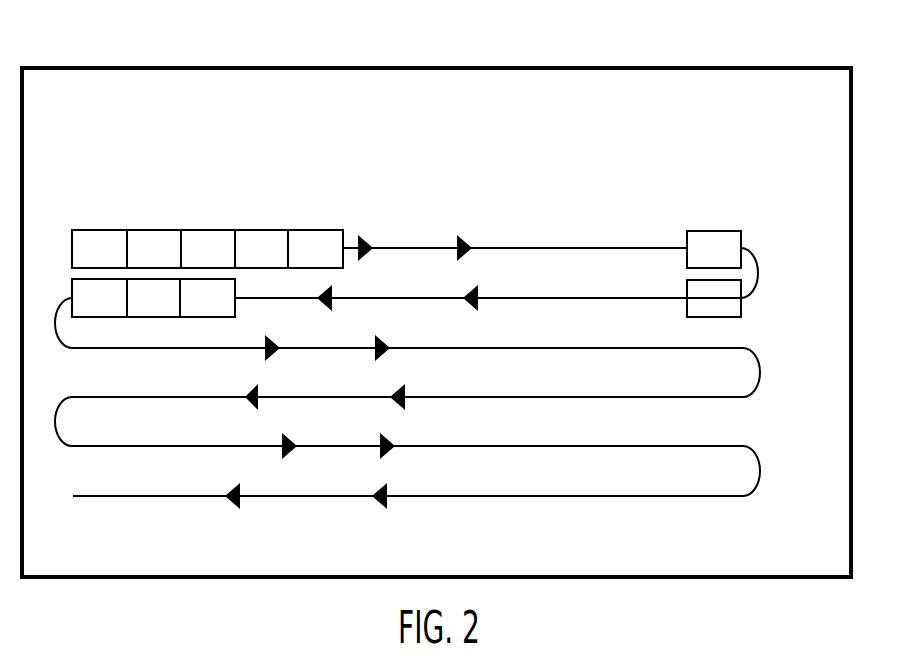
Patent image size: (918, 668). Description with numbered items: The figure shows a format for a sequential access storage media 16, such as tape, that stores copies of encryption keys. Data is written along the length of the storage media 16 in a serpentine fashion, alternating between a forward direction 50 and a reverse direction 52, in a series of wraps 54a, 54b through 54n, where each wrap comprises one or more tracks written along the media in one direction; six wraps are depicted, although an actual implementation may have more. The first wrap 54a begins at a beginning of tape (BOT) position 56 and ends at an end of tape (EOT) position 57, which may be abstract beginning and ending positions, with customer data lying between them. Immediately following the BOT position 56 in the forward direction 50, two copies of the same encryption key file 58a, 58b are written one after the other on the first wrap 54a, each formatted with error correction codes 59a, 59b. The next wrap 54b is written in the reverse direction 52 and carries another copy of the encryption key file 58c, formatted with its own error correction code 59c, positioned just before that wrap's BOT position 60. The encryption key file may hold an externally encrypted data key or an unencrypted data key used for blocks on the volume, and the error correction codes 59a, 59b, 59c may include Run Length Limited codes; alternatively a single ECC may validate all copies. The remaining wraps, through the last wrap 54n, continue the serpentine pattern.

The storage media 16 is at (108, 68).
The beginning of tape (BOT) position 56 is at (98, 230).
The encryption key file 58a is at (157, 230).
The error correction code 59a is at (210, 230).
The encryption key file 58b is at (263, 230).
The error correction code 59b is at (315, 230).
The forward direction 50 is at (463, 237).
The first wrap 54a is at (643, 245).
The end of tape (EOT) position 57 is at (713, 231).
The BOT position 60 is at (72, 288).
The reverse direction 52 is at (473, 288).
The wrap 54b is at (742, 297).
The error correction code 59c is at (155, 317).
The encryption key file 58c is at (208, 317).
The wrap 54n is at (752, 487).